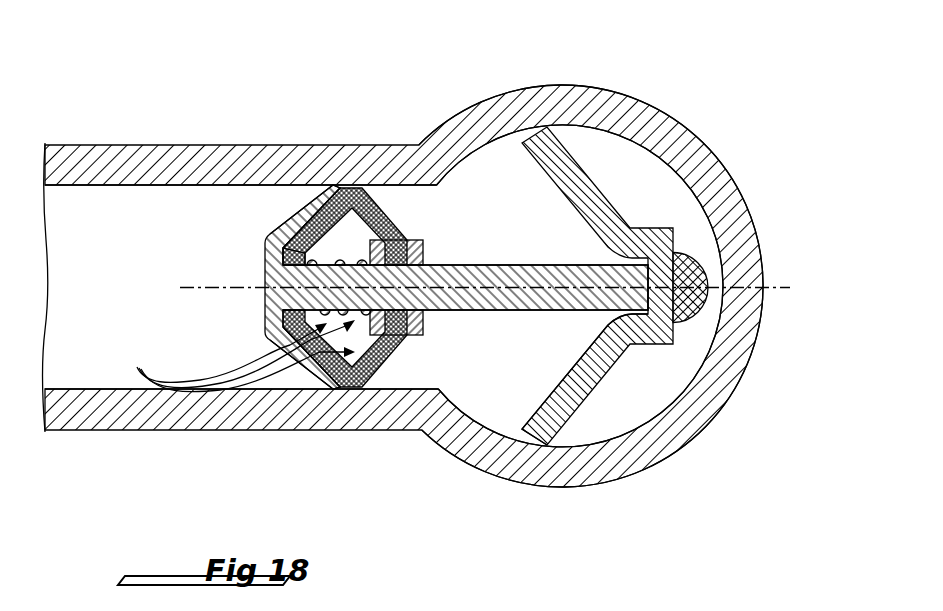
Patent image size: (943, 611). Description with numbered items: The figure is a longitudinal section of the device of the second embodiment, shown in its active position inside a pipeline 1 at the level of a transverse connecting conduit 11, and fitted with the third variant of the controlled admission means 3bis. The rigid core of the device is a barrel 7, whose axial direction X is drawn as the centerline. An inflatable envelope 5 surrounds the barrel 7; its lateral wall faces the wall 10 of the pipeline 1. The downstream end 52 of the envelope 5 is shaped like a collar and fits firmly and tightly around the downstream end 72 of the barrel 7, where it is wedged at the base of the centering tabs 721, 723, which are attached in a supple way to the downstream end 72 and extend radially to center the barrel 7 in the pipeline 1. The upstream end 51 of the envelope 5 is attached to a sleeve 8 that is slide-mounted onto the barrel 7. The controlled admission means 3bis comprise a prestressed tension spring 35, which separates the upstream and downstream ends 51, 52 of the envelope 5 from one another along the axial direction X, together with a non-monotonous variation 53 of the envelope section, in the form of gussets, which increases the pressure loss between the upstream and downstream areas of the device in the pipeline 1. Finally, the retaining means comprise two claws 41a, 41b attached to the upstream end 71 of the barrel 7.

The pipeline 1 is at (118, 438).
The wall of the pipeline 10 is at (88, 389).
The transverse connecting conduit 11 is at (458, 445).
The controlled admission means 3bis is at (246, 356).
The inflatable envelope 5 is at (410, 208).
The upstream end of the inflatable envelope 51 is at (420, 240).
The downstream end of the inflatable envelope 52 is at (267, 245).
The non-monotonous variation of the section of the envelope 53 is at (360, 390).
The barrel 7 is at (552, 265).
The upstream end of the barrel 71 is at (690, 303).
The downstream end of the barrel 72 is at (290, 297).
The centering tab 721 is at (312, 198).
The centering tab 723 is at (318, 368).
The sleeve 8 is at (434, 326).
The tension spring 35 is at (350, 257).
The claw 41a is at (572, 167).
The claw 41b is at (583, 390).
The axial direction of the barrel X is at (781, 287).